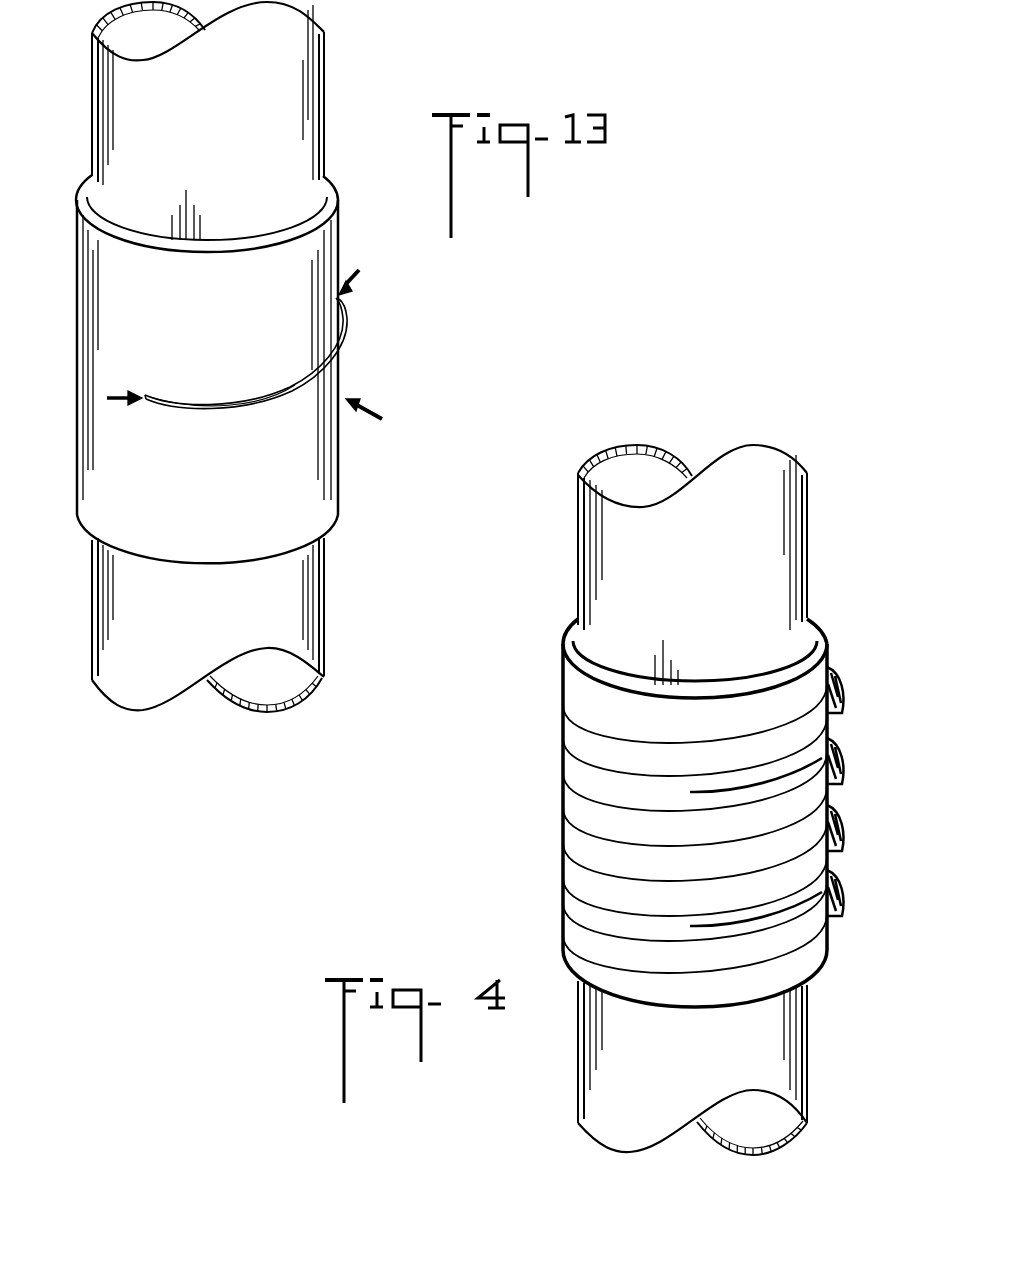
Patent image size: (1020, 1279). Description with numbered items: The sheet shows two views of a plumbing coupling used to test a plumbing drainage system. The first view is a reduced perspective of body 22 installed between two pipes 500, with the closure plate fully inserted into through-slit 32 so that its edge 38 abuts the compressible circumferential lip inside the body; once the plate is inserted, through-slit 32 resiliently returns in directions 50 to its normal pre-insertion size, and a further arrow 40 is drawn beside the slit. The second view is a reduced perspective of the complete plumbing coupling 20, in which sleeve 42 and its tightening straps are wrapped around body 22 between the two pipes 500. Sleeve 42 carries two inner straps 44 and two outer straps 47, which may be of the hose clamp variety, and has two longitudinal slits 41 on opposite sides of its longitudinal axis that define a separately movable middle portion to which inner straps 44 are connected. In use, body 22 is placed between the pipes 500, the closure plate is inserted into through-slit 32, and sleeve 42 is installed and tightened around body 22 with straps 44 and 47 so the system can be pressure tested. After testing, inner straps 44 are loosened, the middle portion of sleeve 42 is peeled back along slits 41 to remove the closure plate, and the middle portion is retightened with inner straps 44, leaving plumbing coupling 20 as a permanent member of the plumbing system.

In FIG. 13, the pipes 500 is at (325, 128).
In FIG. 14, the pipes 500 is at (808, 572).
In FIG. 13, the body 22 is at (362, 235).
In FIG. 13, the edge 38 is at (344, 340).
In FIG. 13, the through-slit 32 is at (207, 398).
In FIG. 13, the directions 50 is at (354, 279).
In FIG. 13, the direction of rotation 40 is at (372, 411).
In FIG. 14, the plumbing coupling 20 is at (510, 630).
In FIG. 14, the sleeve 42 is at (808, 668).
In FIG. 14, the inner straps 44 is at (570, 773).
In FIG. 14, the longitudinal slits 41 is at (753, 788).
In FIG. 14, the outer straps 47 is at (570, 705).